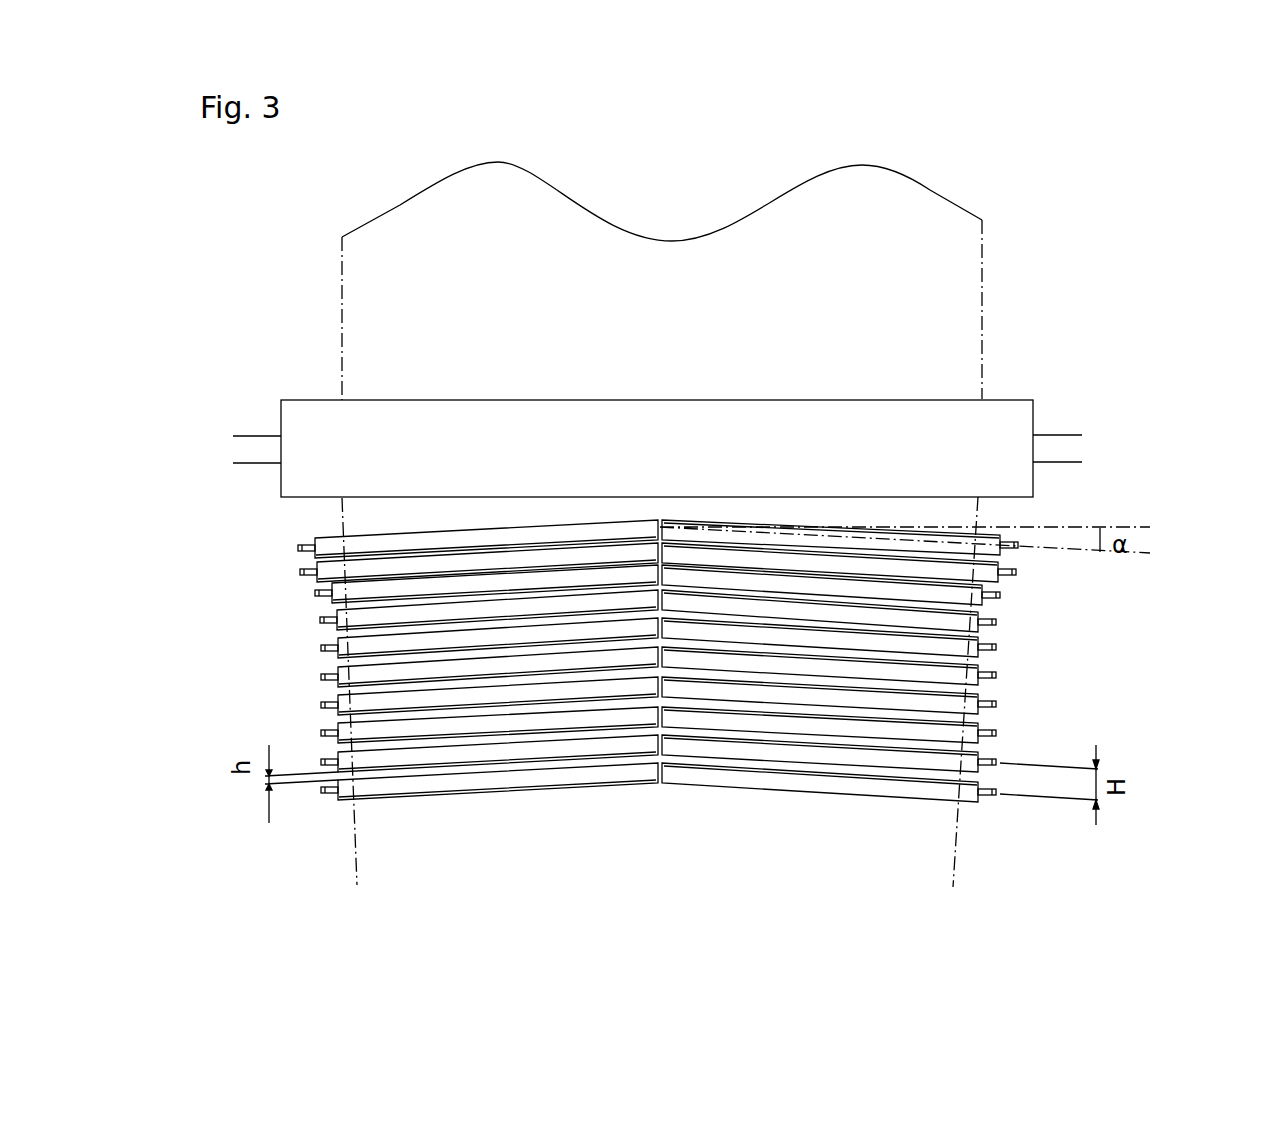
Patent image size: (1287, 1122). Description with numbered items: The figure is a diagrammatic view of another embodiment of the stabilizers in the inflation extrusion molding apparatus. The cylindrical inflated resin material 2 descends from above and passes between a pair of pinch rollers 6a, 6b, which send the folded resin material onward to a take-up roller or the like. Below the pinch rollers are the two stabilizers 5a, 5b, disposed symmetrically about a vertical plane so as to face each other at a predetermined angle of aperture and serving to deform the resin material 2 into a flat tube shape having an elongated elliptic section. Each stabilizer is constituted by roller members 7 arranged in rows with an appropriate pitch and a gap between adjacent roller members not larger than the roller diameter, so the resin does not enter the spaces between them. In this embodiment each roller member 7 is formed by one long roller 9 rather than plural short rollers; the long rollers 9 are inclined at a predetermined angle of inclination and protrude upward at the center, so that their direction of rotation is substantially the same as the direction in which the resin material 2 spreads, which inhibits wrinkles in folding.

The resin material 2 is at (927, 280).
The pinch roller 6a is at (718, 423).
The pinch roller 6b is at (1015, 418).
The stabilizer 5a is at (773, 716).
The stabilizer 5b is at (729, 716).
The roller member 7 is at (1001, 594).
The roller (long) 9 is at (857, 787).